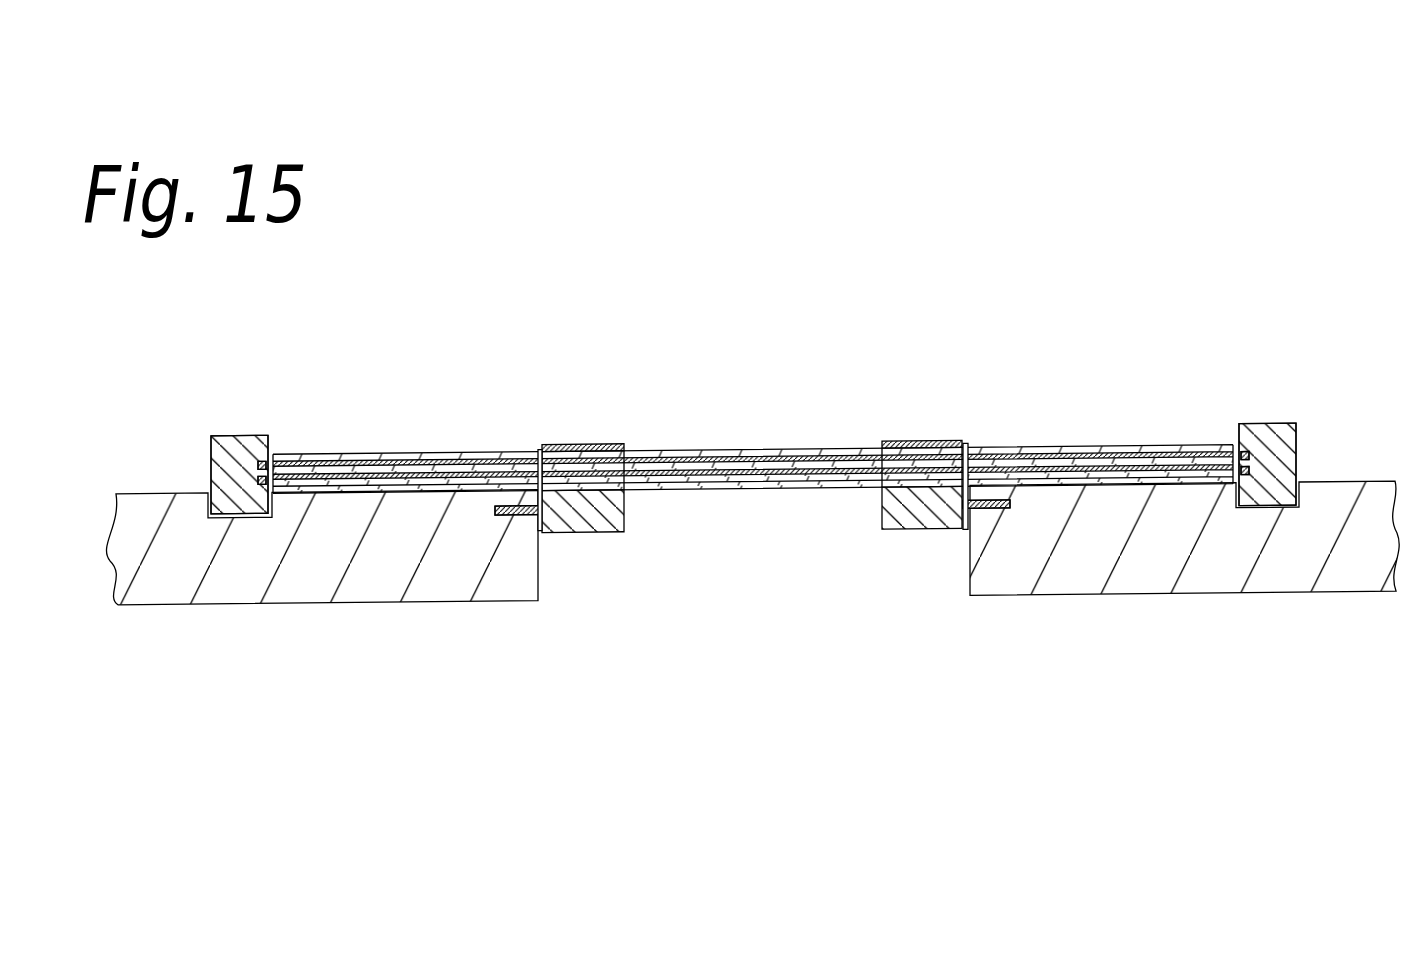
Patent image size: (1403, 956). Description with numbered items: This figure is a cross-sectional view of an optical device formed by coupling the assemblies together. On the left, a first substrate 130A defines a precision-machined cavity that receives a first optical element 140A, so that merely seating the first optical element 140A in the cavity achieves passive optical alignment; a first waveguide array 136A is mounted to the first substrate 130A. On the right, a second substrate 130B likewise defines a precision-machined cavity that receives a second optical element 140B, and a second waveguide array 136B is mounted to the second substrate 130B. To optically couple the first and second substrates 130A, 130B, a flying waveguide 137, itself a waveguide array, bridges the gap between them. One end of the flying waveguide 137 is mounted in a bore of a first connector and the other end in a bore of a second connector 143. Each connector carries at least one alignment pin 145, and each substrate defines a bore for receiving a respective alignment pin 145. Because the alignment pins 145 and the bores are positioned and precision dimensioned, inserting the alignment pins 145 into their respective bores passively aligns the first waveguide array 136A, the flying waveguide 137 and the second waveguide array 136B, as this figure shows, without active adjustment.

The first substrate 130A is at (460, 605).
The second substrate 130B is at (1146, 596).
The first waveguide array 136A is at (449, 450).
The second waveguide array 136B is at (1070, 445).
The flying waveguide 137 is at (702, 445).
The first optical element 140A is at (208, 433).
The second optical element 140B is at (1299, 421).
The second connector 143 is at (925, 441).
The alignment pin 145 is at (542, 533).